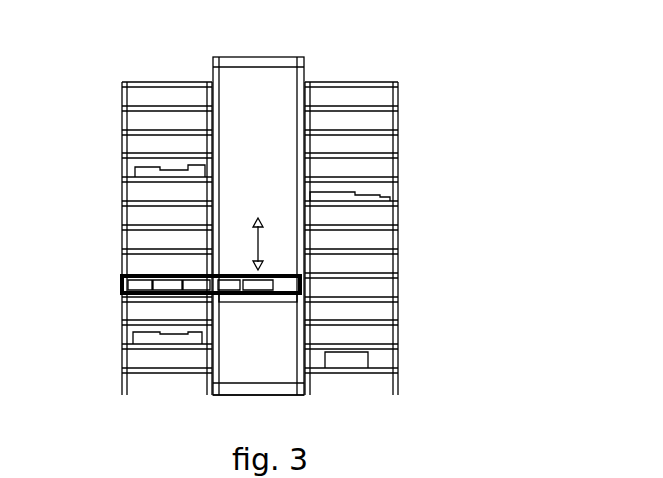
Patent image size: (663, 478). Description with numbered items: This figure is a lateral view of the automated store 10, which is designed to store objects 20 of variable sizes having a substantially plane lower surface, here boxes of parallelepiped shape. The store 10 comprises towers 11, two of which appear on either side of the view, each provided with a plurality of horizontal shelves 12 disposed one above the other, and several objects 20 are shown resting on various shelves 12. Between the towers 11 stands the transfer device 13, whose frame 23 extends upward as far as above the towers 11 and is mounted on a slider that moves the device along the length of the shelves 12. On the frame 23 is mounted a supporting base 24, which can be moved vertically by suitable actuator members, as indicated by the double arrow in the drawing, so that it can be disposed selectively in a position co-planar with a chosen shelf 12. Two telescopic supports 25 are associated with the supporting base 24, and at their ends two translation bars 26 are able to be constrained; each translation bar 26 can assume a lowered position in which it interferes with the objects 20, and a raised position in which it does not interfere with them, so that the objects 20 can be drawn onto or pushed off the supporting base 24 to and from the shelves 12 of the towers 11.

The automated store 10 is at (477, 148).
The tower 11 is at (117, 82).
The horizontal shelf 12 is at (138, 222).
The transfer device 13 is at (273, 52).
The object 20 is at (132, 172).
The frame 23 is at (287, 387).
The supporting base 24 is at (310, 312).
The telescopic support 25 is at (189, 298).
The translation bar 26 is at (122, 278).